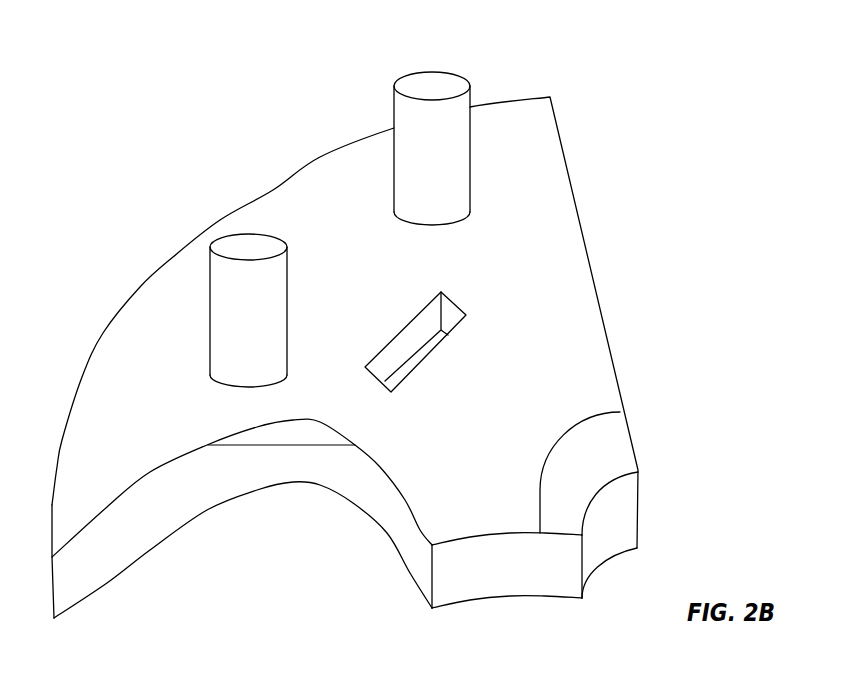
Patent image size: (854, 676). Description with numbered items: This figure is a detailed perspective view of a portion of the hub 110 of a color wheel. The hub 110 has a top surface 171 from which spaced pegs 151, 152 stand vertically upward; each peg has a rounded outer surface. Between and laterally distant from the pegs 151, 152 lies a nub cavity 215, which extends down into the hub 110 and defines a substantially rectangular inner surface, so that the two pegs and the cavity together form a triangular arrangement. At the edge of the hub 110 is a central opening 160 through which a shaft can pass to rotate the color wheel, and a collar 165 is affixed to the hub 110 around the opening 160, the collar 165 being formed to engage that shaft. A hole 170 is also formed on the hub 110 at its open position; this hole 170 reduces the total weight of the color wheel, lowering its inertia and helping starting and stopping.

The hub 110 is at (100, 137).
The peg 151 is at (398, 77).
The peg 152 is at (268, 325).
The nub cavity 215 is at (463, 314).
The top surface 171 is at (127, 460).
The hole 170 is at (248, 585).
The collar 165 is at (623, 447).
The central opening 160 is at (632, 517).